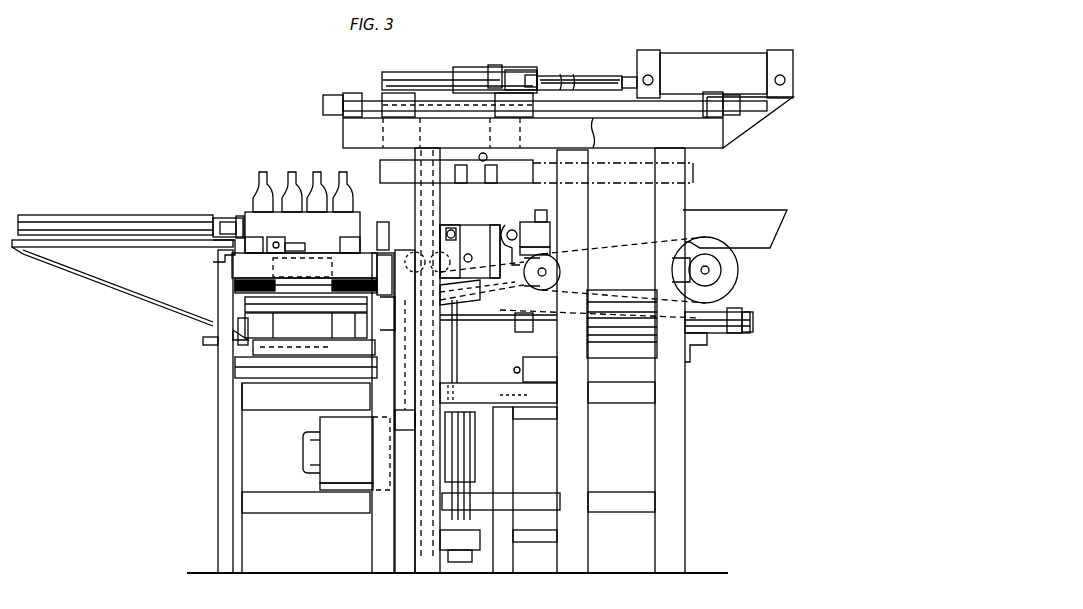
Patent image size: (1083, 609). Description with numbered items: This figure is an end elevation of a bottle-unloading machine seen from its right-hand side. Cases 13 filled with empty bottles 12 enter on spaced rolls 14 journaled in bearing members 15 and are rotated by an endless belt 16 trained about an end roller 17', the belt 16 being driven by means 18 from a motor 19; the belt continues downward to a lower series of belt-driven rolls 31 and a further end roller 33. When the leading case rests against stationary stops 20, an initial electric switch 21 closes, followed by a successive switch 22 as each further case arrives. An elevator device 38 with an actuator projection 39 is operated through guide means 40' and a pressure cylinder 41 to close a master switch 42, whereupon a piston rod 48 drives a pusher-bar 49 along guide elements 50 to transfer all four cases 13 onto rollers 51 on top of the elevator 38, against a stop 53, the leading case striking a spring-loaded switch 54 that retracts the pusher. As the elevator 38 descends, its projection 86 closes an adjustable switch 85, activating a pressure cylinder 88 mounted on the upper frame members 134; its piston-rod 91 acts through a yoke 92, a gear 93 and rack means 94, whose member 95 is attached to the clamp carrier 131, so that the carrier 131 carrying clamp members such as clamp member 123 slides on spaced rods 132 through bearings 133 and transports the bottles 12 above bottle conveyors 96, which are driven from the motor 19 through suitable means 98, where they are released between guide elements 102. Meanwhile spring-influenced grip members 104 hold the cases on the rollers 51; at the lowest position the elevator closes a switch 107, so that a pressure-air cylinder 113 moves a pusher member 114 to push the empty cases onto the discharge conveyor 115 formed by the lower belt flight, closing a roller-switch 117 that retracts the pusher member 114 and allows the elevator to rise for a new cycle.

The bottles 12 is at (343, 172).
The cases 13 is at (352, 215).
The rolls 14 is at (368, 253).
The bearing members 15 is at (250, 280).
The endless belt 16 is at (306, 325).
The end roller 17' is at (276, 299).
The drive means 18 is at (412, 340).
The motor 19 is at (303, 452).
The stationary stops 20 is at (255, 245).
The initial electric switch 21 is at (300, 243).
The switch 22 is at (222, 255).
The belt driven rolls 31 is at (349, 325).
The end roller 33 is at (352, 368).
The elevator device 38 is at (395, 290).
The actuator projection 39 is at (478, 298).
The guide means 40' is at (498, 341).
The pressure cylinder 41 is at (465, 450).
The master switch 42 is at (451, 228).
The piston rod 48 is at (222, 218).
The pusher-bar 49 is at (240, 215).
The guide elements 50 is at (108, 214).
The rollers 51 is at (452, 251).
The stop 53 is at (510, 225).
The spring-loaded switch 54 is at (528, 222).
The adjustable switch 85 is at (535, 369).
The projection 86 is at (540, 285).
The pressure cylinder 88 is at (712, 53).
The piston-rod 91 is at (600, 76).
The yoke 92 is at (495, 66).
The gear 93 is at (527, 70).
The rack means 94 is at (400, 76).
The rack member 95 is at (433, 74).
The bottle conveyors 96 is at (618, 258).
The drive means 98 is at (690, 245).
The guide elements 102 is at (645, 215).
The grip members 104 is at (385, 222).
The switch 107 is at (497, 395).
The pressure-air cylinder 113 is at (727, 333).
The pusher member 114 is at (524, 332).
The discharge conveyor 115 is at (255, 345).
The roller-switch 117 is at (236, 330).
The clamp member 123 is at (458, 110).
The clamp carrier 131 is at (383, 133).
The rods 132 is at (617, 110).
The bearings 133 is at (385, 96).
The main frame members 134 is at (712, 140).